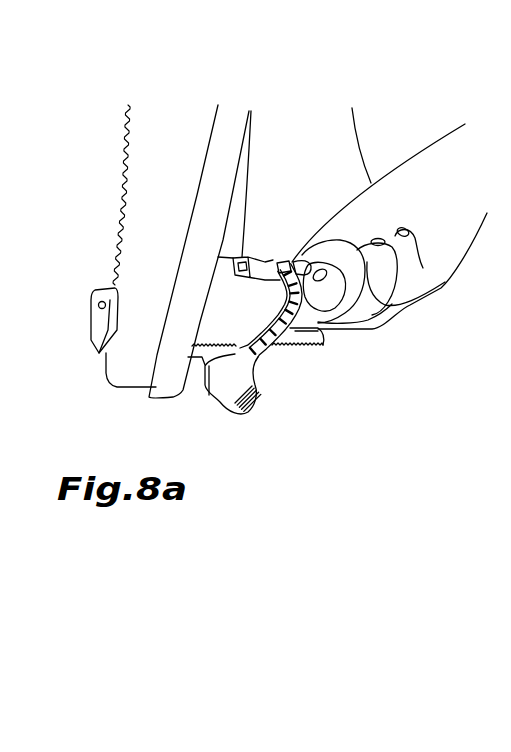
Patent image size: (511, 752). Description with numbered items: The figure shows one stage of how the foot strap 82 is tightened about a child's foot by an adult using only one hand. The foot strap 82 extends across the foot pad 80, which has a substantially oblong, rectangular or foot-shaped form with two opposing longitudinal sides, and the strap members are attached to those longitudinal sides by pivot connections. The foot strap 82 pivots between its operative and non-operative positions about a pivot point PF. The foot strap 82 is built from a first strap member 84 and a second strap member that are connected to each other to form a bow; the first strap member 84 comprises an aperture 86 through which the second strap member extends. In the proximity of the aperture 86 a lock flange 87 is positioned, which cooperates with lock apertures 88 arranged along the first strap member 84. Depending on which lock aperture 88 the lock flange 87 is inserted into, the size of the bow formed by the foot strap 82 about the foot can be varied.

The foot pad 80 is at (193, 368).
The foot strap 82 is at (308, 320).
The first strap member 84 is at (266, 273).
The aperture 86 is at (289, 267).
The lock flange 87 is at (301, 272).
The lock apertures 88 is at (281, 325).
The pivot point PF is at (217, 398).